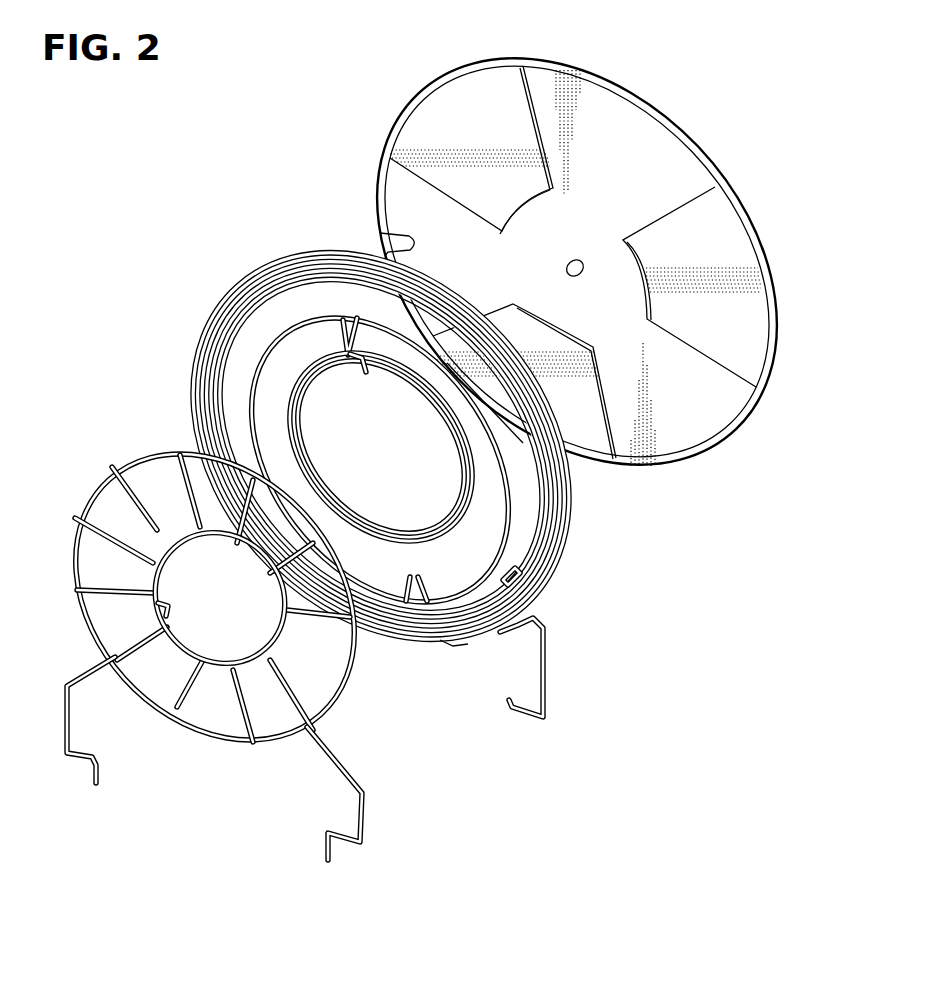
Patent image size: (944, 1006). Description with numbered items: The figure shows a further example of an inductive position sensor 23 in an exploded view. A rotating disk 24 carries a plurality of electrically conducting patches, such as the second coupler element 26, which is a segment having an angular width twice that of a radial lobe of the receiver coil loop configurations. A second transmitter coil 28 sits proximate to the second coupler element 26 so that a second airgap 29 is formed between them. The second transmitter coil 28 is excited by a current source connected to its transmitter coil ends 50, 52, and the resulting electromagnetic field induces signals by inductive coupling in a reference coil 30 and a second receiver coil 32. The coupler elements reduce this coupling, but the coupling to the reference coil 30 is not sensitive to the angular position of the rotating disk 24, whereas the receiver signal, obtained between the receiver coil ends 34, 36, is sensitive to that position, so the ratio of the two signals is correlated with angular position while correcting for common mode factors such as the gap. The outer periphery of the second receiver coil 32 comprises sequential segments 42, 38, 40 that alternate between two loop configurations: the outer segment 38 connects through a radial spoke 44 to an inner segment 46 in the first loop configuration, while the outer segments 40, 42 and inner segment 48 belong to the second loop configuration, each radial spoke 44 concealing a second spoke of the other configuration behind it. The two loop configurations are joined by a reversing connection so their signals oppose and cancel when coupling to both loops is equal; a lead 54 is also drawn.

The inductive position sensor 23 is at (193, 170).
The rotating disk 24 is at (563, 62).
The second coupler element 26 is at (710, 238).
The second transmitter coil 28 is at (284, 257).
The second airgap 29 is at (323, 297).
The reference coil 30 is at (504, 510).
The second receiver coil 32 is at (360, 654).
The receiver coil end 34 is at (96, 784).
The receiver coil end 36 is at (328, 861).
The outer segment 38 is at (92, 498).
The outer segment 40 is at (143, 454).
The outer segment 42 is at (75, 570).
The radial spoke 44 is at (128, 598).
The inner segment 46 is at (155, 578).
The inner segment 48 is at (158, 611).
The transmitter coil end 50 is at (554, 578).
The transmitter coil end 52 is at (548, 664).
The coil lead 54 is at (453, 646).